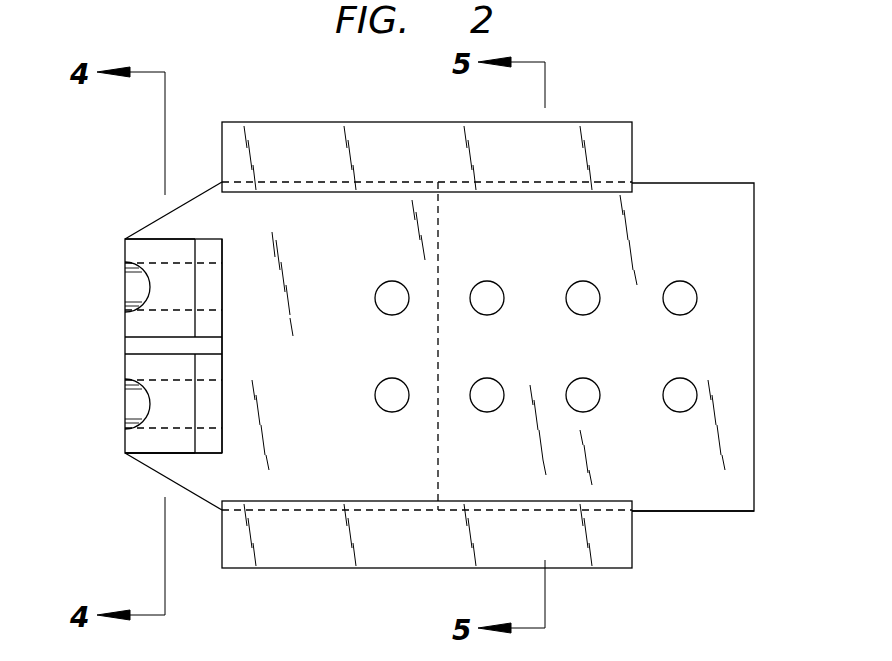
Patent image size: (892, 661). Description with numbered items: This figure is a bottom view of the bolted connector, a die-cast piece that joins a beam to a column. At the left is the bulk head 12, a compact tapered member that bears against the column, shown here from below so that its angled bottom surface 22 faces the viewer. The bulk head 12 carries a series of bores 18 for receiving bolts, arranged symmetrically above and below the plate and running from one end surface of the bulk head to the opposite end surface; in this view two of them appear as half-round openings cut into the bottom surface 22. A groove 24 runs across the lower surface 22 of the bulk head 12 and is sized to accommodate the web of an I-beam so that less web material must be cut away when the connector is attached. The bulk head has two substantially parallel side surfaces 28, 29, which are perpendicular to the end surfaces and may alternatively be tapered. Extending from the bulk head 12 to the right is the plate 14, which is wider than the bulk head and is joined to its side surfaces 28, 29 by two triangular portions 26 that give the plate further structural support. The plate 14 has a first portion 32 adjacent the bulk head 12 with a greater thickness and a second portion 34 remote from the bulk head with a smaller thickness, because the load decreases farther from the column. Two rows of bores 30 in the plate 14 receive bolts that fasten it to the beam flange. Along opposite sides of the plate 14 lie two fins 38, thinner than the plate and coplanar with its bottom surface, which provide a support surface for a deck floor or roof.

The bulk head 12 is at (115, 445).
The plate 14 is at (762, 243).
The bores 18 is at (130, 288).
The angled bottom surface 22 is at (158, 430).
The groove 24 is at (208, 345).
The triangular portions 26 is at (166, 213).
The side surface 28 is at (165, 455).
The side surface 29 is at (158, 237).
The bores 30 is at (688, 388).
The first portion 32 is at (294, 475).
The second portion 34 is at (700, 495).
The fins 38 is at (616, 135).